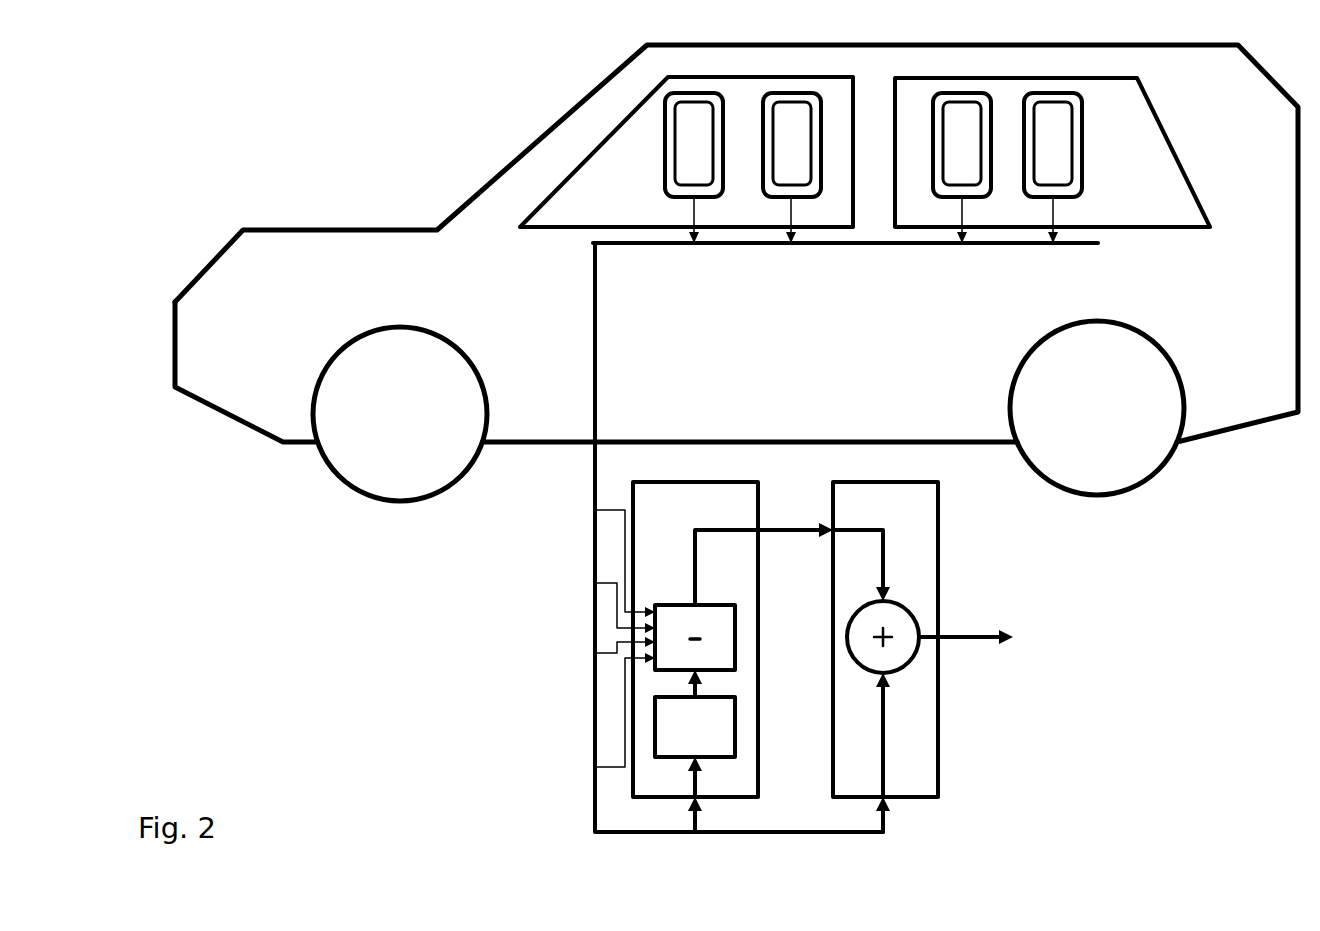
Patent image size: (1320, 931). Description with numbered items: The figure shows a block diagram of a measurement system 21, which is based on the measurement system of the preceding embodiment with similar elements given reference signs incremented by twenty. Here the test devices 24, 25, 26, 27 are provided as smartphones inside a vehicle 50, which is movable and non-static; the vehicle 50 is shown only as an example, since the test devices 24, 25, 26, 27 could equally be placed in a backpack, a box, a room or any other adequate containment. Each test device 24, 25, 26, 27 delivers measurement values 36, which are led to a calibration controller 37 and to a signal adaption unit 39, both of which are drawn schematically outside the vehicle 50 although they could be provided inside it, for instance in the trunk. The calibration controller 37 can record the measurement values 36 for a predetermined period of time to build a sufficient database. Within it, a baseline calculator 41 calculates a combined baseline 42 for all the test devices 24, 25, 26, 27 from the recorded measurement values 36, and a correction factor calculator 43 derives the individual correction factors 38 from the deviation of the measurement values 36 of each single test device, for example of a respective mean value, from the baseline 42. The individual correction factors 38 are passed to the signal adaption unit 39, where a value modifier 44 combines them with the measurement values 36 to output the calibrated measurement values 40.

The measurement system 21 is at (440, 106).
The vehicle 50 is at (403, 230).
The test device 24 is at (662, 168).
The test device 25 is at (790, 93).
The test device 26 is at (953, 93).
The test device 27 is at (1085, 135).
The measurement values 36 is at (593, 658).
The calibration controller 37 is at (632, 493).
The individual correction factors 38 is at (800, 530).
The signal adaption unit 39 is at (938, 738).
The calibrated measurement values 40 is at (997, 632).
The baseline calculator 41 is at (735, 740).
The baseline 42 is at (700, 683).
The correction factor calculator 43 is at (735, 640).
The value modifier 44 is at (903, 598).